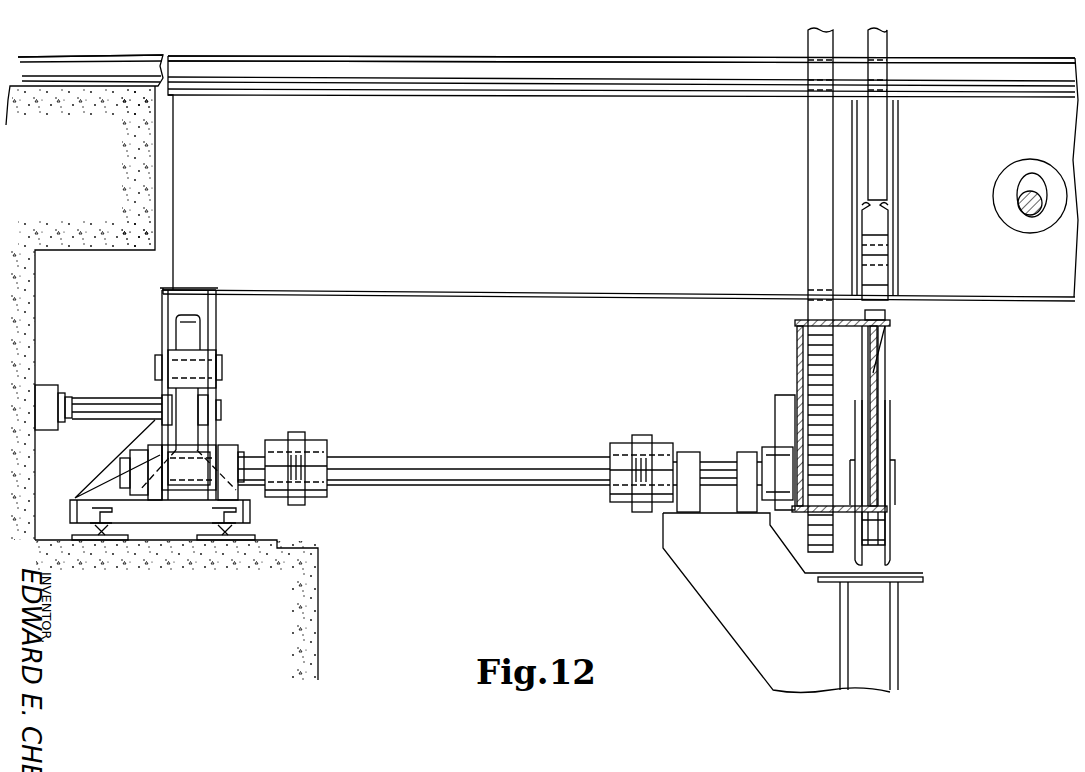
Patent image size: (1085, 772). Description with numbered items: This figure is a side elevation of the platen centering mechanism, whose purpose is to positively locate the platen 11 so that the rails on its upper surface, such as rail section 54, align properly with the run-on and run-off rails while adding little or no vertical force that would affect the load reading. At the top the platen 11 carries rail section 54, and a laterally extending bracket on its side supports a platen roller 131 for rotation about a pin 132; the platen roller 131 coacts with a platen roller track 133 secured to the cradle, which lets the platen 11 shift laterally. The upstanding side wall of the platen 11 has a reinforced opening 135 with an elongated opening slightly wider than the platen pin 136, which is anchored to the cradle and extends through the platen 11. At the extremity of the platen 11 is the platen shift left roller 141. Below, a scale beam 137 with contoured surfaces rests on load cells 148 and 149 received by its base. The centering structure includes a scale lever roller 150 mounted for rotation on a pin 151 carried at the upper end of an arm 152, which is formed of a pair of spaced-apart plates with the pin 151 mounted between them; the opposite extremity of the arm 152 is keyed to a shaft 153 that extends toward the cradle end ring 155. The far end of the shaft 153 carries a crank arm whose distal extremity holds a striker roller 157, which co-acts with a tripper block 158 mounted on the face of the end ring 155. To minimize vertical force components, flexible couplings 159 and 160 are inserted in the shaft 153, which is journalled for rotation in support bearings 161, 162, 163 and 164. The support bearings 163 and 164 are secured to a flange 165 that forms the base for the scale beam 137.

The platen 11 is at (1005, 118).
The rail section 54 is at (963, 63).
The platen roller 131 is at (878, 275).
The pin 132 is at (896, 245).
The platen roller track 133 is at (886, 312).
The reinforced opening 135 is at (1035, 228).
The platen pin 136 is at (1020, 195).
The scale beam 137 is at (190, 432).
The platen shift left roller 141 is at (192, 330).
The load cell 148 is at (110, 514).
The load cell 149 is at (212, 514).
The scale lever roller 150 is at (200, 352).
The pin 151 is at (220, 372).
The arm 152 is at (210, 408).
The shaft 153 is at (433, 487).
The cradle end ring 155 is at (800, 342).
The striker roller 157 is at (782, 505).
The tripper block 158 is at (786, 400).
The flexible coupling 159 is at (642, 440).
The flexible coupling 160 is at (300, 443).
The support bearing 161 is at (747, 460).
The support bearing 162 is at (690, 460).
The support bearing 163 is at (236, 443).
The support bearing 164 is at (140, 452).
The flange 165 is at (250, 518).